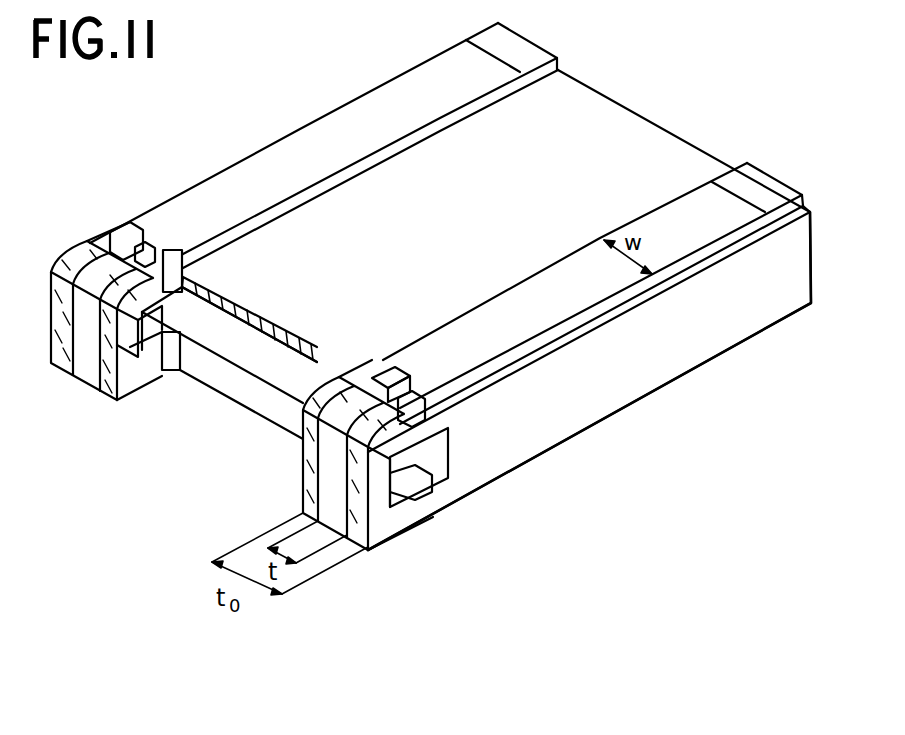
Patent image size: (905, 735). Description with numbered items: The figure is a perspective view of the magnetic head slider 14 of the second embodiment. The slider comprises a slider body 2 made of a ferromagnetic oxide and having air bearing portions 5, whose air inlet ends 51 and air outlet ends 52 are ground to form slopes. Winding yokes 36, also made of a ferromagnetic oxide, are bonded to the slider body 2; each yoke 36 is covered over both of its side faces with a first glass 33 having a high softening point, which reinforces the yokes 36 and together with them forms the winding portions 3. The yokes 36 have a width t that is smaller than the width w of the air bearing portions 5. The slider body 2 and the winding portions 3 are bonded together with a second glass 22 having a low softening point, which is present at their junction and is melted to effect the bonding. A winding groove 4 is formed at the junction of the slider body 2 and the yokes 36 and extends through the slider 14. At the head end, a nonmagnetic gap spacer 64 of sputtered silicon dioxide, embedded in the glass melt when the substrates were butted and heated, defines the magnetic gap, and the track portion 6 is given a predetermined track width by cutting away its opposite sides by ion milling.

The slider body 2 is at (517, 443).
The magnetic head slider 14 is at (618, 433).
The air bearing portions 5 is at (313, 132).
The air inlet ends 51 is at (762, 182).
The air outlet ends 52 is at (320, 447).
The second glass 22 is at (363, 366).
The gap spacer 64 is at (386, 378).
The track portion 6 is at (400, 385).
The winding groove 4 is at (437, 449).
The winding portion 3 is at (228, 437).
The first glass 33 is at (52, 363).
The winding yoke 36 is at (383, 548).